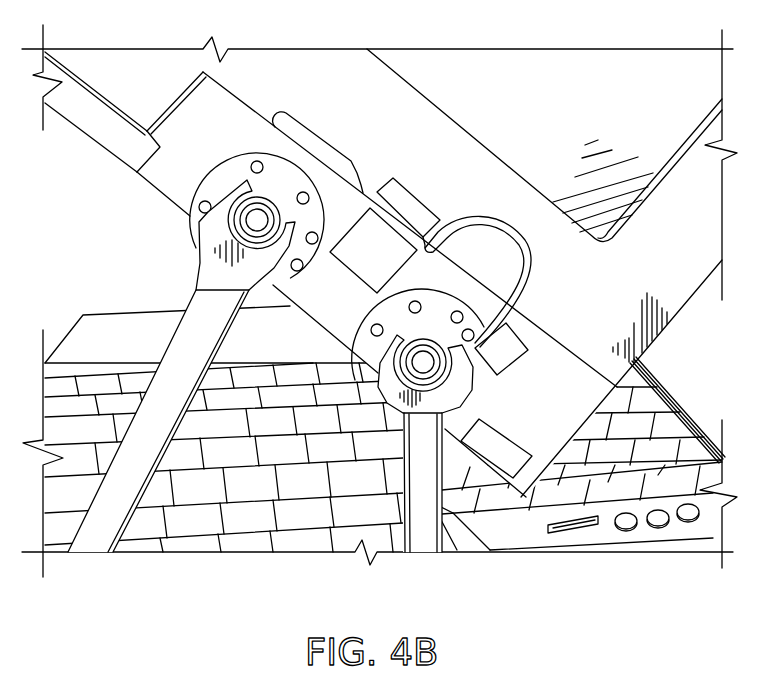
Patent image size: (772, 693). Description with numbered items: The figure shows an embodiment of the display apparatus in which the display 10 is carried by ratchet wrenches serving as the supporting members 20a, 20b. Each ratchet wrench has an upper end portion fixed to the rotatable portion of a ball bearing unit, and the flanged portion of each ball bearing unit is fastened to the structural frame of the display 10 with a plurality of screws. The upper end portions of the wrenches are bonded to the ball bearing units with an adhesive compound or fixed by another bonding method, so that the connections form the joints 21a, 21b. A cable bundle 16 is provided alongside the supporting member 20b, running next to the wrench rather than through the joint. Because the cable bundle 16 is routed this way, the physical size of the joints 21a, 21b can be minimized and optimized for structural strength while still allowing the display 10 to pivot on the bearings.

The display 10 is at (562, 116).
The cable bundle 16 is at (527, 283).
The supporting member 20a is at (122, 483).
The supporting member 20b is at (445, 505).
The joint 21a is at (255, 223).
The joint 21b is at (425, 362).